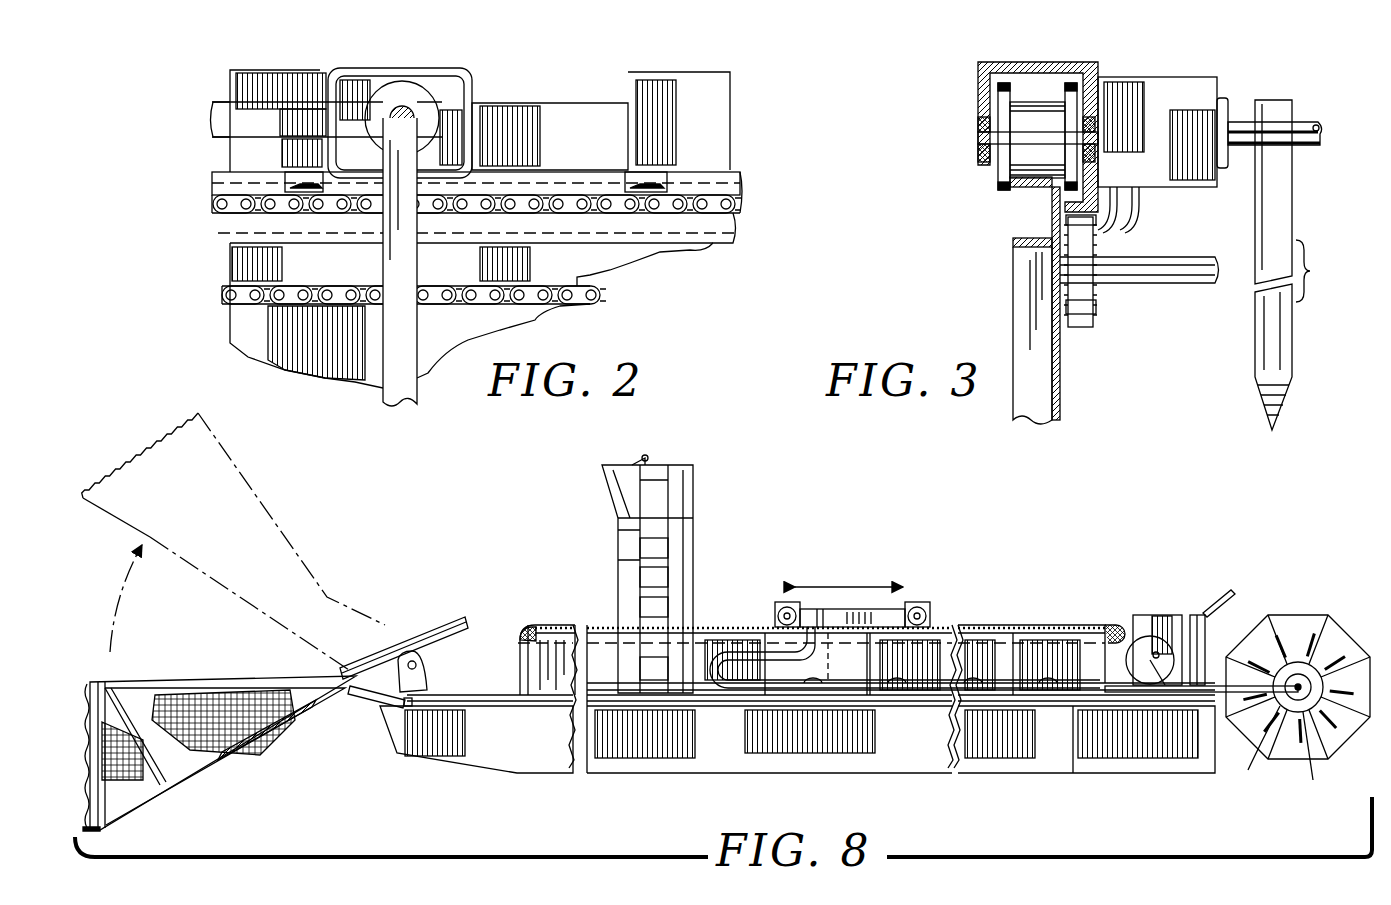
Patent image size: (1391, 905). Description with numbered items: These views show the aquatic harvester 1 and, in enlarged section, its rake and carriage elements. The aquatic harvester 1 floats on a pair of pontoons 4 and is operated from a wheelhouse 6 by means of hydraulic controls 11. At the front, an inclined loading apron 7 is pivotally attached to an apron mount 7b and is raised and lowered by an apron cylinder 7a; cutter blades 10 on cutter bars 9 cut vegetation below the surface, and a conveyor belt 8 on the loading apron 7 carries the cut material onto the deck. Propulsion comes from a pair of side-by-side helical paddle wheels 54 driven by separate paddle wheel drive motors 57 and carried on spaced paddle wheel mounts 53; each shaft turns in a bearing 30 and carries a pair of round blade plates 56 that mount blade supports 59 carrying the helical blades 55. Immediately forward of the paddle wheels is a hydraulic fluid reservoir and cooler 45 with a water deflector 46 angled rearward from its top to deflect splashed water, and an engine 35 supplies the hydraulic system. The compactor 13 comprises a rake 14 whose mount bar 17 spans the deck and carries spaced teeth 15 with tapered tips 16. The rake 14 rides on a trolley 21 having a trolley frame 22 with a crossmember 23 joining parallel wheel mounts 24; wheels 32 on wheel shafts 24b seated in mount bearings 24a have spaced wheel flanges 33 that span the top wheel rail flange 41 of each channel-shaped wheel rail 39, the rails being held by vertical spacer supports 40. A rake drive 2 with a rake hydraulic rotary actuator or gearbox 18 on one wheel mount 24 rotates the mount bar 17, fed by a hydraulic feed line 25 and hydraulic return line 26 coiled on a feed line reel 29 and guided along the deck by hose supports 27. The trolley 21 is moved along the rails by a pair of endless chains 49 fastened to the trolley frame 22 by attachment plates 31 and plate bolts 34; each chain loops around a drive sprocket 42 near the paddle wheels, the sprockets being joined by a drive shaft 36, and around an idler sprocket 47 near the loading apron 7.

In FIG. 8, the aquatic harvester 1 is at (816, 515).
In FIG. 3, the rake drive 2 is at (1172, 50).
In FIG. 8, the rake drive 2 is at (836, 598).
In FIG. 8, the pontoons 4 is at (488, 748).
In FIG. 8, the wheelhouse 6 is at (698, 502).
In FIG. 8, the inclined loading apron 7 is at (403, 644).
In FIG. 8, the apron cylinder 7a is at (368, 700).
In FIG. 8, the apron mount 7b is at (402, 660).
In FIG. 8, the conveyor belt 8 is at (446, 616).
In FIG. 8, the cutter bars 9 is at (107, 712).
In FIG. 8, the cutter blades 10 is at (128, 457).
In FIG. 8, the hydraulic controls 11 is at (650, 456).
In FIG. 2, the compactor 13 is at (318, 90).
In FIG. 3, the compactor 13 is at (1230, 68).
In FIG. 2, the rake 14 is at (420, 330).
In FIG. 3, the rake 14 is at (1313, 300).
In FIG. 3, the teeth 15 is at (1260, 353).
In FIG. 3, the tapered tips 16 is at (1272, 403).
In FIG. 2, the mount bar 17 is at (402, 108).
In FIG. 3, the mount bar 17 is at (1240, 127).
In FIG. 2, the rake hydraulic rotary actuator or gearbox 18 is at (465, 78).
In FIG. 3, the trolley 21 is at (970, 78).
In FIG. 8, the trolley 21 is at (773, 607).
In FIG. 2, the trolley frame 22 is at (737, 121).
In FIG. 3, the trolley frame 22 is at (1060, 62).
In FIG. 8, the trolley frame 22 is at (930, 605).
In FIG. 2, the crossmember 23 is at (722, 92).
In FIG. 8, the crossmember 23 is at (912, 603).
In FIG. 3, the wheel mounts 24 is at (985, 70).
In FIG. 8, the wheel mounts 24 is at (785, 600).
In FIG. 3, the mount bearings 24a is at (1088, 132).
In FIG. 3, the wheel shafts 24b is at (975, 126).
In FIG. 3, the hydraulic feed line 25 is at (1130, 215).
In FIG. 3, the hydraulic return line 26 is at (1135, 220).
In FIG. 8, the hydraulic return line 26 is at (980, 693).
In FIG. 8, the hose supports 27 is at (898, 693).
In FIG. 8, the feed line reel 29 is at (1142, 638).
In FIG. 8, the bearing 30 is at (1292, 712).
In FIG. 2, the attachment plates 31 is at (256, 150).
In FIG. 3, the wheels 32 is at (1030, 148).
In FIG. 8, the wheels 32 is at (770, 616).
In FIG. 3, the wheel flanges 33 is at (1035, 95).
In FIG. 2, the plate bolts 34 is at (300, 190).
In FIG. 8, the engine 35 is at (1172, 615).
In FIG. 3, the drive shaft 36 is at (1176, 285).
In FIG. 2, the wheel rails 39 is at (674, 250).
In FIG. 3, the wheel rails 39 is at (1025, 236).
In FIG. 8, the wheel rails 39 is at (538, 665).
In FIG. 3, the spacer supports 40 is at (1030, 298).
In FIG. 8, the spacer supports 40 is at (522, 690).
In FIG. 3, the top wheel rail flange 41 is at (1025, 182).
In FIG. 8, the drive sprocket 42 is at (1115, 625).
In FIG. 8, the hydraulic fluid reservoir and cooler 45 is at (1198, 612).
In FIG. 8, the water deflector 46 is at (1232, 590).
In FIG. 8, the idler sprocket 47 is at (520, 625).
In FIG. 2, the endless chains 49 is at (456, 283).
In FIG. 3, the endless chains 49 is at (1096, 328).
In FIG. 8, the endless chains 49 is at (547, 622).
In FIG. 8, the paddle wheel mounts 53 is at (1240, 688).
In FIG. 8, the helical paddle wheels 54 is at (1300, 612).
In FIG. 8, the helical blades 55 is at (1352, 740).
In FIG. 8, the blade plates 56 is at (1315, 759).
In FIG. 8, the paddle wheel drive motors 57 is at (1251, 745).
In FIG. 8, the blade supports 59 is at (1318, 645).